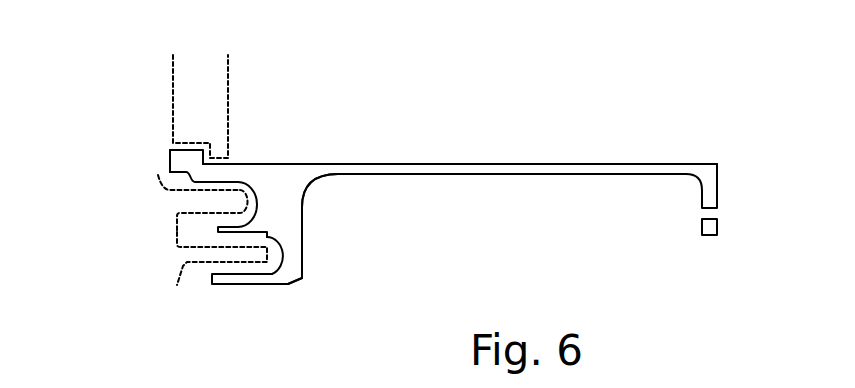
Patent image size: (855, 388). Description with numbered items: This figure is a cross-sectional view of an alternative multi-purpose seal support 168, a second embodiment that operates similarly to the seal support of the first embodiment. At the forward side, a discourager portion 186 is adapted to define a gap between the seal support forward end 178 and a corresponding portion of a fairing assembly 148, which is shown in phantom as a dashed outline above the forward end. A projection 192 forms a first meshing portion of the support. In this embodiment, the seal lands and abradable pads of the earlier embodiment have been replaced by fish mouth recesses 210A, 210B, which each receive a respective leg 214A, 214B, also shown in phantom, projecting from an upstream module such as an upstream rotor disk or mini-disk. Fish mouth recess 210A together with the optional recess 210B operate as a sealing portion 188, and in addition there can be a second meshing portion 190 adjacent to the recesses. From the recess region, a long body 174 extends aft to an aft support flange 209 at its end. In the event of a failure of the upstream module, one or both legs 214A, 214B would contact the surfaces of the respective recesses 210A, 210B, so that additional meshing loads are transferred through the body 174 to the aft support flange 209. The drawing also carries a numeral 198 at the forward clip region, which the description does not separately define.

The multi-purpose seal support 168 is at (755, 115).
The discourager portion 186 is at (167, 150).
The retaining lip 198 is at (167, 165).
The seal support forward end 178 is at (247, 145).
The fairing assembly 148 is at (155, 130).
The body 174 is at (542, 168).
The aft support flange 209 is at (708, 190).
The second meshing portion 190 is at (303, 214).
The sealing portion 188 is at (328, 192).
The fish mouth recess 210A is at (256, 201).
The fish mouth recess 210B is at (283, 264).
The projection 192 is at (153, 180).
The leg 214A is at (175, 205).
The leg 214B is at (175, 255).